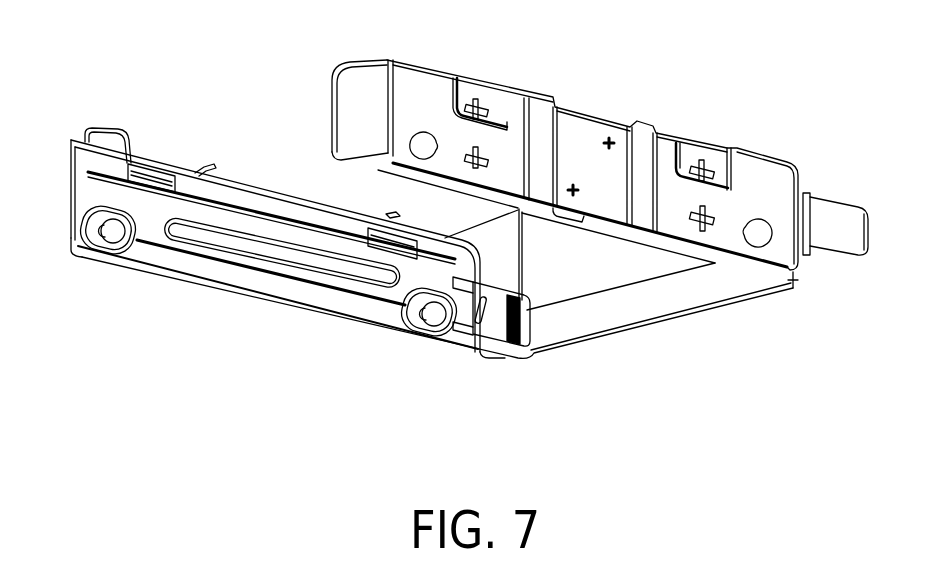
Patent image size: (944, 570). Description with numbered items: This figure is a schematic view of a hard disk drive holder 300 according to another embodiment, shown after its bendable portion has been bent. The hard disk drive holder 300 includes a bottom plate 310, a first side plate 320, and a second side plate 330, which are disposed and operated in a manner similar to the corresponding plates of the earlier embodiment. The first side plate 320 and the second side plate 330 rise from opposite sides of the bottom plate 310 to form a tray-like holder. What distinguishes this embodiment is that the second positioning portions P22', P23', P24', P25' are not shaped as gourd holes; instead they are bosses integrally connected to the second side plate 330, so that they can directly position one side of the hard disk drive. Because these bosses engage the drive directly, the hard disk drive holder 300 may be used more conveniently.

The hard disk drive holder 300 is at (834, 489).
The bottom plate 310 is at (717, 335).
The first side plate 320 is at (97, 190).
The second side plate 330 is at (773, 178).
The second positioning portion P22' is at (755, 271).
The second positioning portion P23' is at (364, 123).
The second positioning portion P24' is at (510, 72).
The second positioning portion P25' is at (722, 120).